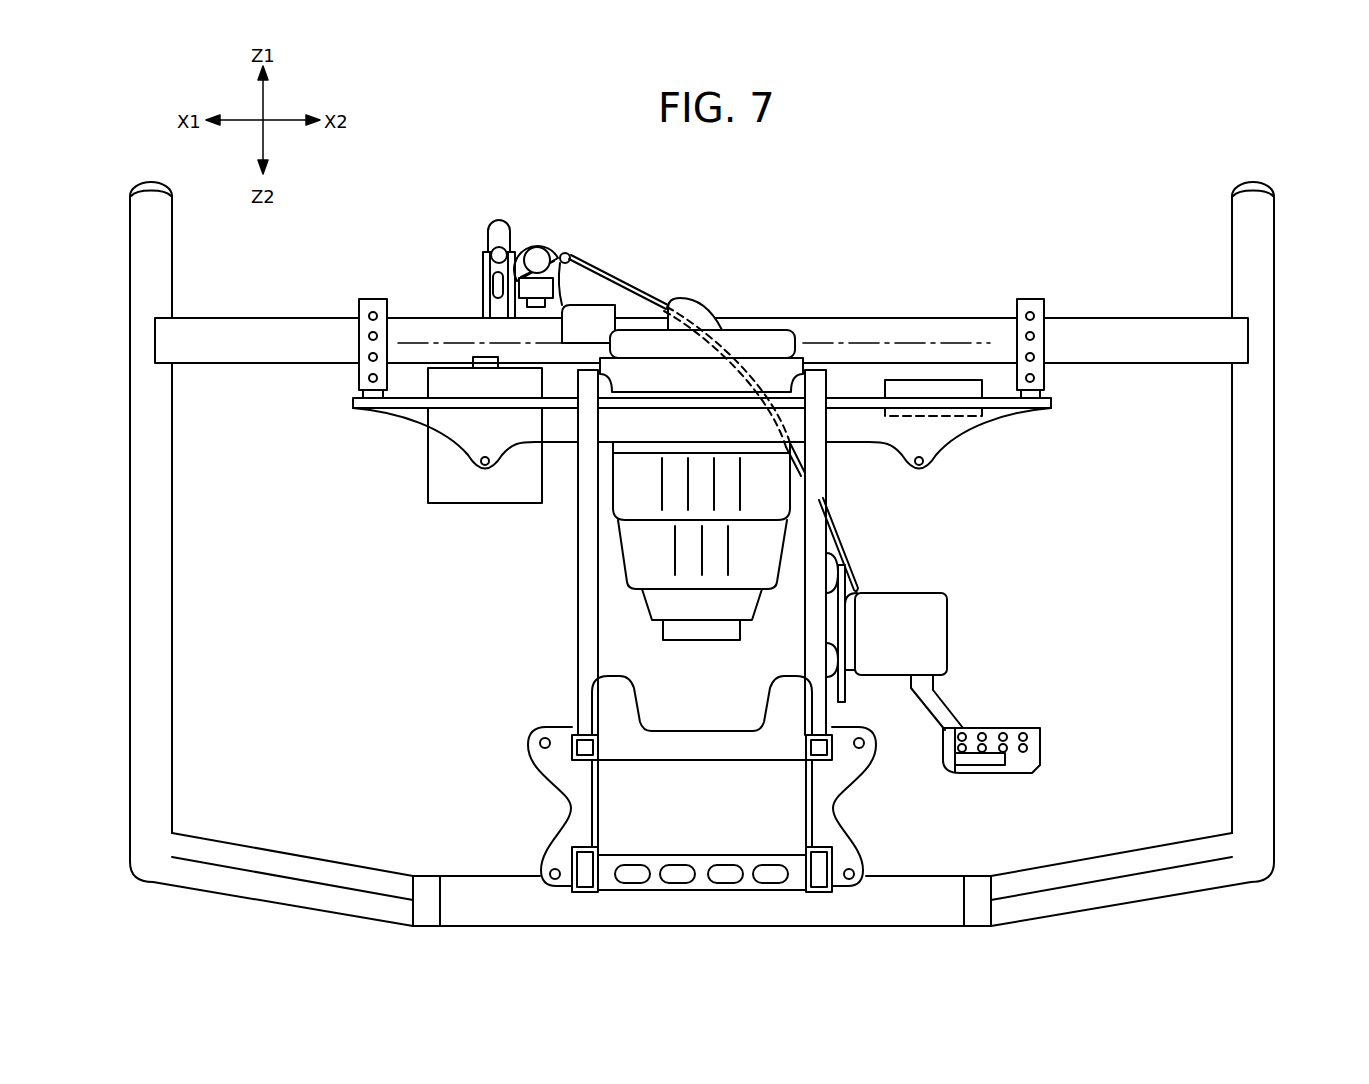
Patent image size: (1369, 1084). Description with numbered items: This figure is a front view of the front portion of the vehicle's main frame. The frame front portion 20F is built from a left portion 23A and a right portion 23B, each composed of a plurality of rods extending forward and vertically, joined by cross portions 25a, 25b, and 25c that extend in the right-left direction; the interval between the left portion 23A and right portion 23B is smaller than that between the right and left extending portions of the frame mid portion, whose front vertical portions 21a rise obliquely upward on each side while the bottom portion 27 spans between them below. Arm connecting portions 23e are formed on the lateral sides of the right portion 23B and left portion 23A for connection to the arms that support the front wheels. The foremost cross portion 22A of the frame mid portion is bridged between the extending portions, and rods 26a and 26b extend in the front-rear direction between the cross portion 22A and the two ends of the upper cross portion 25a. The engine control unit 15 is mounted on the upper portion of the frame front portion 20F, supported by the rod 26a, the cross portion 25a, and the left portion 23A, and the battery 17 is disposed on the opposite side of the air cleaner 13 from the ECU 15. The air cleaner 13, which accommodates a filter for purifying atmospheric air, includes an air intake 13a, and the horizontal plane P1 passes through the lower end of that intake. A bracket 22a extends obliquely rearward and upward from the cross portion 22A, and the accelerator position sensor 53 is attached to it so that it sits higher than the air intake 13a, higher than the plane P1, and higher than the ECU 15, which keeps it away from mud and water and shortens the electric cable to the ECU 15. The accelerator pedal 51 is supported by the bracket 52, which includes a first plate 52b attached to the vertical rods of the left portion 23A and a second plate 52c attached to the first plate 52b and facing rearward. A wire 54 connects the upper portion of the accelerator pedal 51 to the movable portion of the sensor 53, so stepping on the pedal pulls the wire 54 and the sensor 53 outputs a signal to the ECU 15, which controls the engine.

The air cleaner 13 is at (757, 330).
The air intake 13a is at (566, 250).
The engine control unit 15 is at (885, 383).
The battery 17 is at (430, 489).
The frame front portion 20F is at (680, 552).
The front vertical portion 21a is at (174, 502).
The cross portion 22A is at (1120, 331).
The bracket 22a is at (483, 283).
The left portion 23A is at (826, 476).
The right portion 23B is at (579, 550).
The arm connecting portion 23e is at (576, 809).
The cross portion 25a is at (462, 434).
The cross portion 25b is at (598, 703).
The cross portion 25c is at (698, 891).
The rod 26a is at (1031, 298).
The rod 26b is at (373, 298).
The bottom portion 27 is at (926, 876).
The accelerator pedal 51 is at (948, 705).
The bracket 52 is at (921, 627).
The first plate 52b is at (849, 662).
The second plate 52c is at (937, 637).
The accelerator position sensor 53 is at (537, 250).
The wire 54 is at (630, 284).
The horizontal plane P1 is at (893, 340).